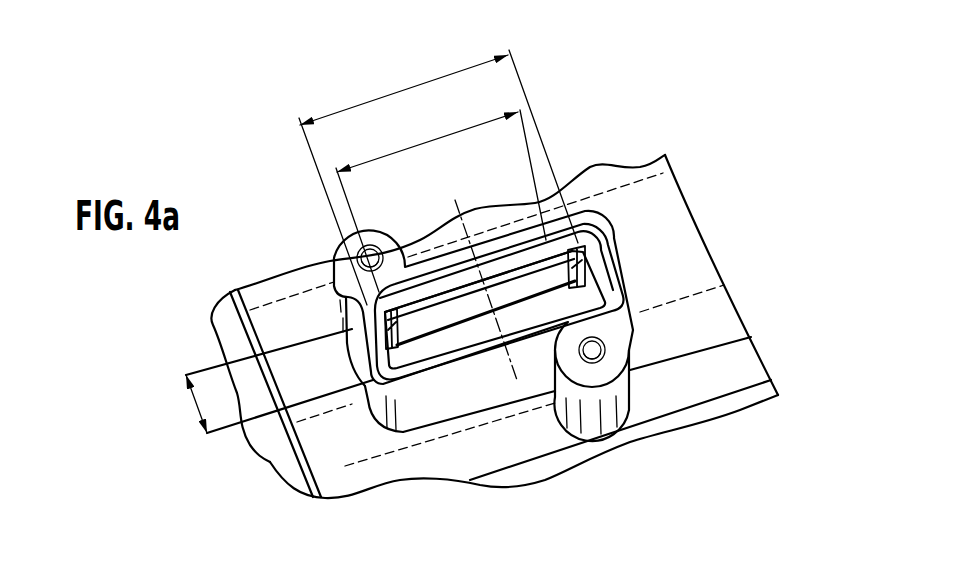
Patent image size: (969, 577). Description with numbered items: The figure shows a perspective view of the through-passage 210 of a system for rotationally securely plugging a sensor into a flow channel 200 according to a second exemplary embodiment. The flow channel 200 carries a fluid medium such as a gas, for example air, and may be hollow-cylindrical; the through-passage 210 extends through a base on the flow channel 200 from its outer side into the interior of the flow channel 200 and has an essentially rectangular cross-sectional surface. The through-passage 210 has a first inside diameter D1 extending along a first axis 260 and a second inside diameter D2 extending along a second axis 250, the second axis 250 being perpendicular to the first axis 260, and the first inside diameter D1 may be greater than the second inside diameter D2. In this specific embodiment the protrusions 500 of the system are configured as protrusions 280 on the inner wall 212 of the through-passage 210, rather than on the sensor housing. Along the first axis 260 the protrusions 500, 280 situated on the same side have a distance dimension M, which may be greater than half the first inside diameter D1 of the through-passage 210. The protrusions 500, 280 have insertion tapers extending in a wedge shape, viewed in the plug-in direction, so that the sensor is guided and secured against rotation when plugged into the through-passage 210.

The flow channel 200 is at (705, 320).
The first axis 260 is at (637, 262).
The protrusions 500 is at (398, 336).
The protrusions 280 is at (578, 266).
The through-passage 210 is at (446, 298).
The inner wall 212 is at (521, 280).
The second axis 250 is at (518, 382).
The first inside diameter D1 is at (397, 92).
The distance dimension M is at (422, 146).
The second inside diameter D2 is at (196, 407).